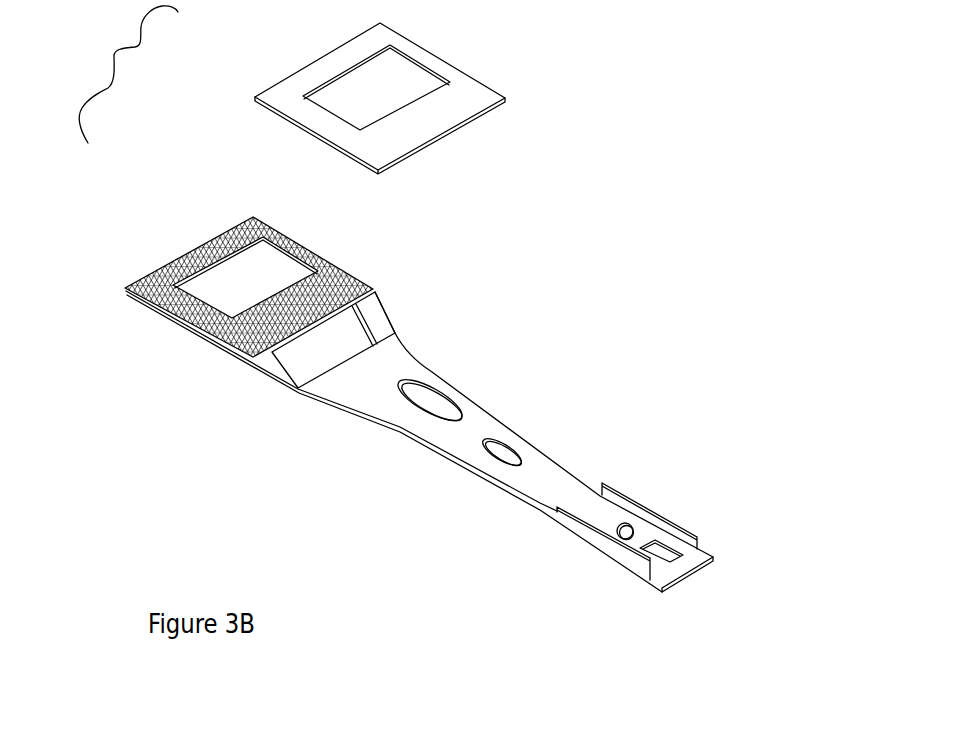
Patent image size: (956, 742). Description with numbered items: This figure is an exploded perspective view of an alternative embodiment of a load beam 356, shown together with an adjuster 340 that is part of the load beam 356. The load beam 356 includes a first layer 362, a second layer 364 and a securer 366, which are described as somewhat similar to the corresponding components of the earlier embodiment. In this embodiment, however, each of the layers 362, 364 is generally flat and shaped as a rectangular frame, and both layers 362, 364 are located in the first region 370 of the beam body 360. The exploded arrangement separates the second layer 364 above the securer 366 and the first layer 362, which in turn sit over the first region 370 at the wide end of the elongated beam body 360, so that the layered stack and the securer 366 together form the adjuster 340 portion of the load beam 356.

The adjuster 340 is at (118, 74).
The load beam 356 is at (595, 207).
The beam body 360 is at (493, 416).
The first layer 362 is at (126, 291).
The second layer 364 is at (287, 76).
The securer 366 is at (216, 236).
The first region 370 is at (223, 353).